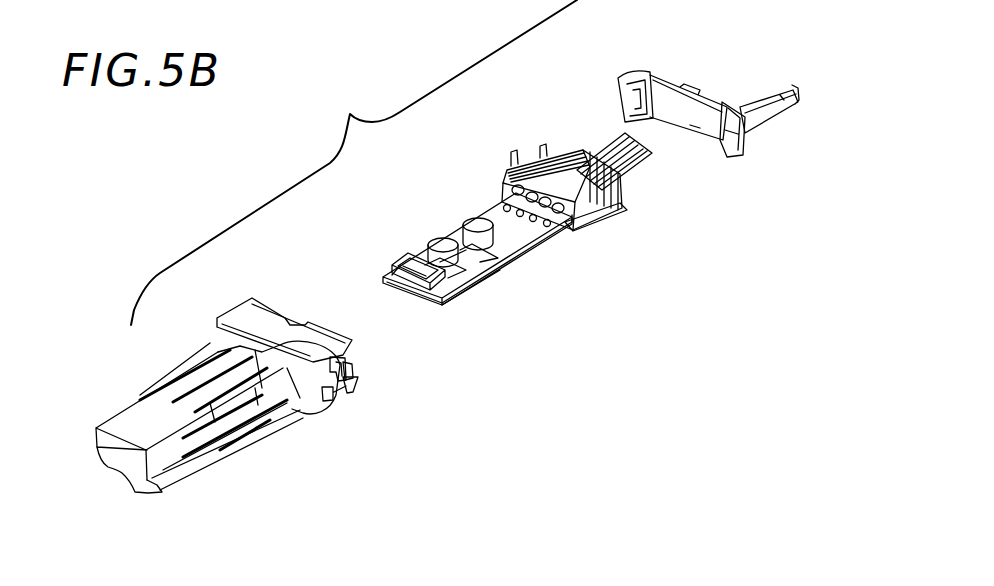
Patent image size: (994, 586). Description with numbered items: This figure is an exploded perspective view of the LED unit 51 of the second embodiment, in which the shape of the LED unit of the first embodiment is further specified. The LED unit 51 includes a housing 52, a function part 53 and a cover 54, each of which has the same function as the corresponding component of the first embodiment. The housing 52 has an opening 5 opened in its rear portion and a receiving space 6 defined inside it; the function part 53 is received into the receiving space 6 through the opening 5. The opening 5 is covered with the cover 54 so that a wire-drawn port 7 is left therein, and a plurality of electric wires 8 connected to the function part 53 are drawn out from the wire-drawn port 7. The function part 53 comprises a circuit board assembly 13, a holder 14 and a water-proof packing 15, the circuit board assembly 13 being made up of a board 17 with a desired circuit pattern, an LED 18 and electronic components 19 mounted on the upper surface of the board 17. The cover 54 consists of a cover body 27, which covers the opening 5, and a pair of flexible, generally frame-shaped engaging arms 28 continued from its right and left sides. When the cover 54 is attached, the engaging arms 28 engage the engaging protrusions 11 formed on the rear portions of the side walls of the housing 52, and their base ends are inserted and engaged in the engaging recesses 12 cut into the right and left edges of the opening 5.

The LED unit 51 is at (351, 108).
The housing 52 is at (135, 420).
The receiving space 6 is at (133, 468).
The opening 5 is at (316, 340).
The engaging recess 12 is at (341, 357).
The engaging protrusion 11 is at (352, 370).
The wire-drawn port 7 is at (360, 378).
The function part 53 is at (468, 195).
The circuit board assembly 13 is at (522, 258).
The board 17 is at (465, 290).
The LED 18 is at (425, 248).
The electronic components 19 is at (465, 218).
The holder 14 is at (585, 232).
The water-proof packing 15 is at (515, 160).
The electric wires 8 is at (603, 150).
The engaging arms 28 is at (625, 85).
The cover body 27 is at (713, 130).
The cover 54 is at (714, 110).